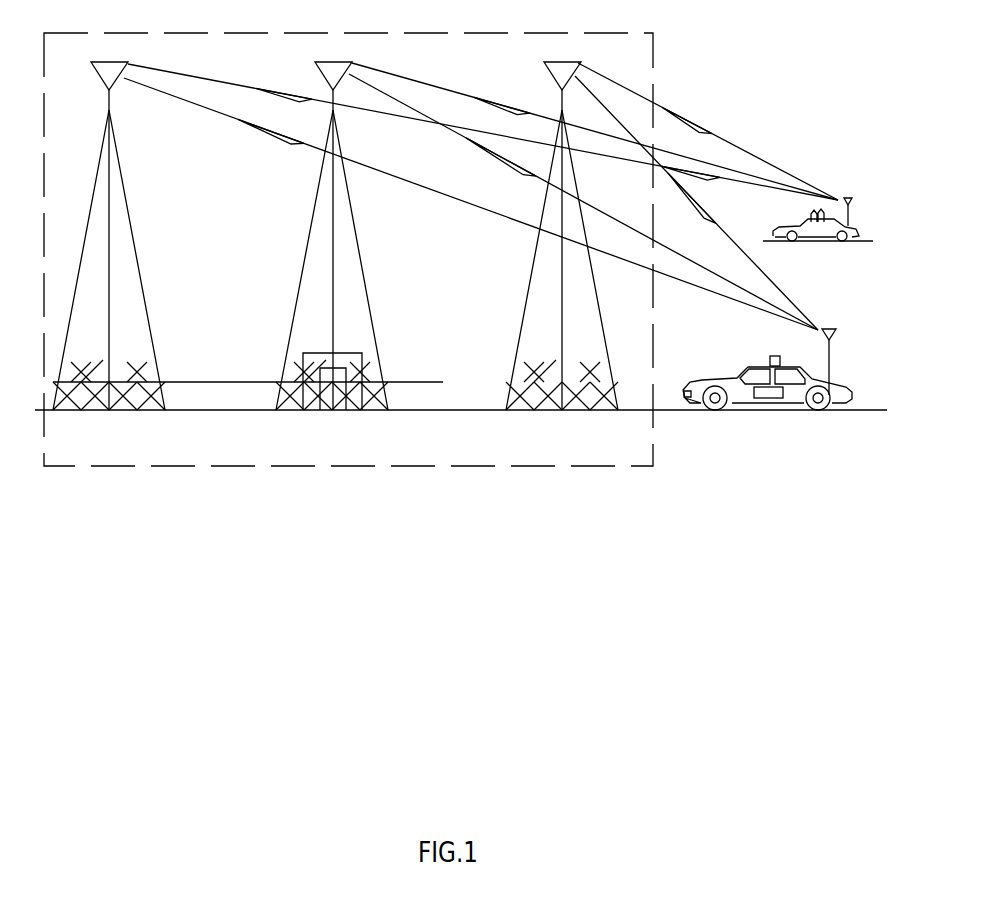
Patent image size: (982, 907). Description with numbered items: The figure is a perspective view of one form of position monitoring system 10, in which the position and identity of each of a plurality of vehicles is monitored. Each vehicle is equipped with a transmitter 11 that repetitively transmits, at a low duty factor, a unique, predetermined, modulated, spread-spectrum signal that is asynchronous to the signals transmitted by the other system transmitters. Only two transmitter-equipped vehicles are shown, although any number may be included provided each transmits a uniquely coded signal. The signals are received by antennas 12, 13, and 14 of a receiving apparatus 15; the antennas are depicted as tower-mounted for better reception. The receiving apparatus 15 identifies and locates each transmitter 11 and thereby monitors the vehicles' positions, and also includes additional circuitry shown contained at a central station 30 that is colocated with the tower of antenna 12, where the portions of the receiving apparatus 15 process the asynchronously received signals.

The position monitoring system 10 is at (623, 649).
The transmitter 11 is at (845, 241).
The antenna 12 is at (327, 70).
The antenna 13 is at (97, 70).
The antenna 14 is at (552, 77).
The receiving apparatus 15 is at (360, 467).
The central station 30 is at (347, 352).